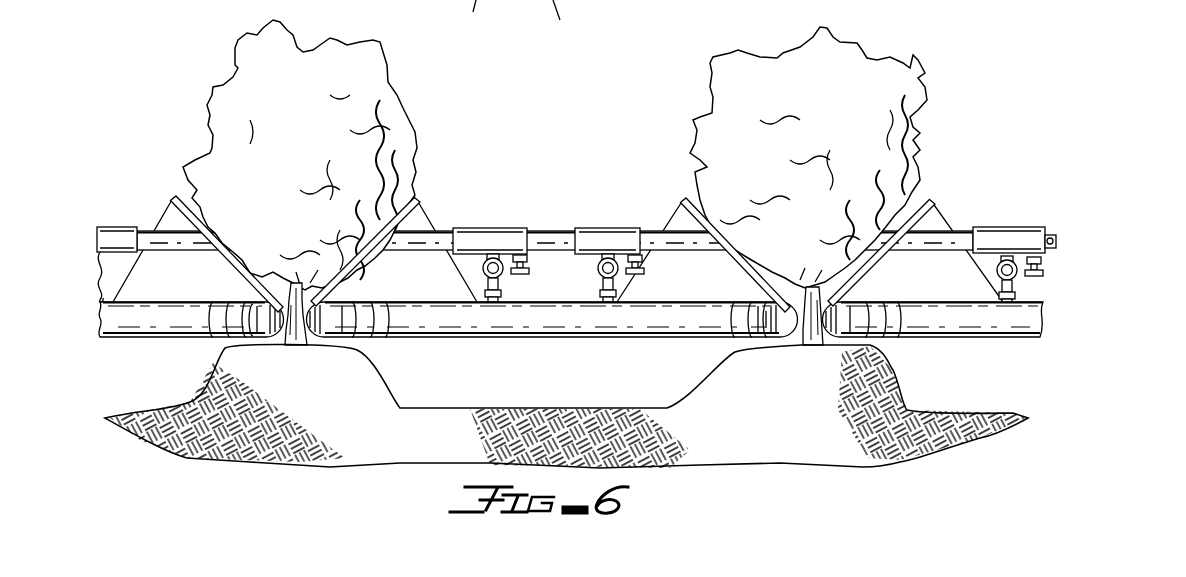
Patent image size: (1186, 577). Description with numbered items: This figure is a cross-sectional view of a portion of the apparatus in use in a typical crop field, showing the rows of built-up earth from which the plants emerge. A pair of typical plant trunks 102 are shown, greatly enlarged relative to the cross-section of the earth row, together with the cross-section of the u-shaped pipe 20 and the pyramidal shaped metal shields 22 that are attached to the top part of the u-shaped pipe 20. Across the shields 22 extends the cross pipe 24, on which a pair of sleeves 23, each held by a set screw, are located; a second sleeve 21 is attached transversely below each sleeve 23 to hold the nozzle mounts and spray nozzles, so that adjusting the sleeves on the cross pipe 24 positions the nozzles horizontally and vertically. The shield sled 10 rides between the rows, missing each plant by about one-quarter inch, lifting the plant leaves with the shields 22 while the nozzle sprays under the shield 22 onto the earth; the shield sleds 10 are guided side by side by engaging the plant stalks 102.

The shield sled 10 is at (168, 190).
The u-shaped pipe 20 is at (160, 338).
The second sleeve 21 is at (598, 274).
The pyramidal shaped metal shield 22 is at (199, 285).
The sleeve 23 is at (485, 230).
The cross pipe 24 is at (552, 232).
The plant trunks 102 is at (413, 87).